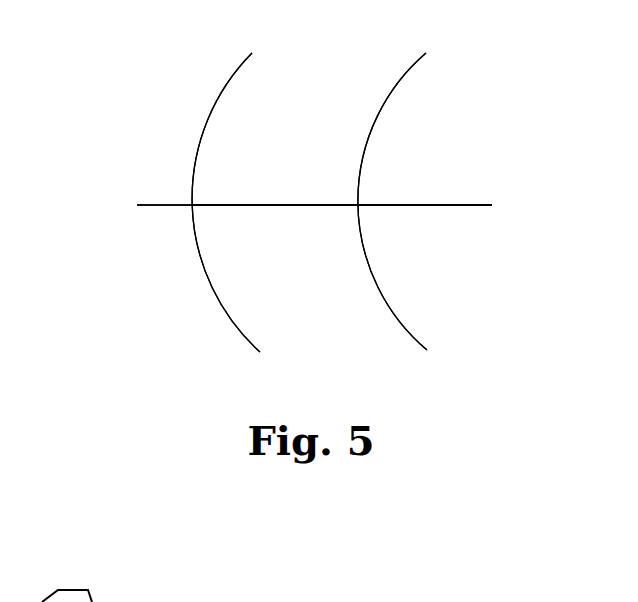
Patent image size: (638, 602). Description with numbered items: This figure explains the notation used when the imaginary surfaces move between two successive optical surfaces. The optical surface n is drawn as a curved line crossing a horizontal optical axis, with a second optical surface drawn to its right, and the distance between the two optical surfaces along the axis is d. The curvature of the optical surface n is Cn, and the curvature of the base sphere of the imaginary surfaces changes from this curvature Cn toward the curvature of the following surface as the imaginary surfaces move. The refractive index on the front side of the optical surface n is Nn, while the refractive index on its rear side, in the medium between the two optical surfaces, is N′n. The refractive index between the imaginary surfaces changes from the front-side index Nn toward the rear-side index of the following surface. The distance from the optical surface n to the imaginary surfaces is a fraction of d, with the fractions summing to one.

The optical surface n is at (228, 179).
The distance between the optical surfaces d is at (275, 227).
The curvature of the optical surface n Cn is at (232, 225).
The front-side refractive index of the optical surface n Nn is at (159, 163).
The rear-side refractive index of the optical surface n N′n is at (275, 163).